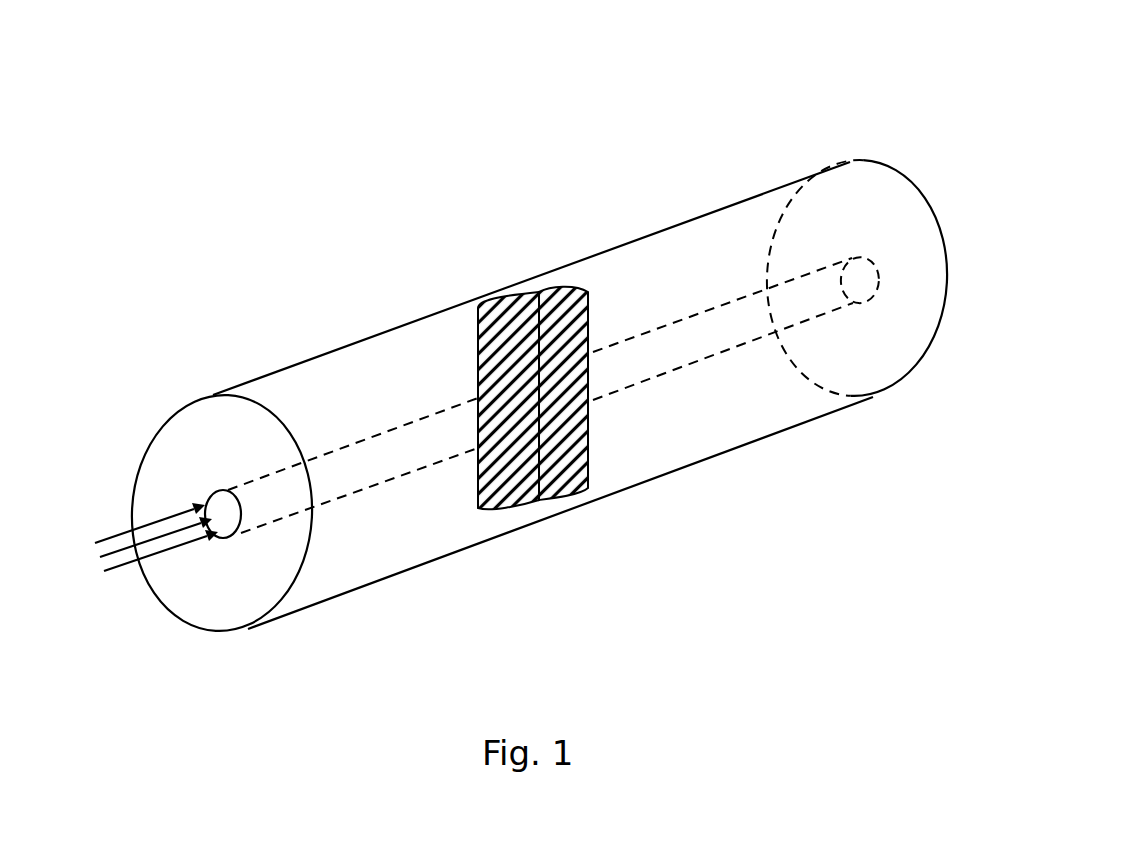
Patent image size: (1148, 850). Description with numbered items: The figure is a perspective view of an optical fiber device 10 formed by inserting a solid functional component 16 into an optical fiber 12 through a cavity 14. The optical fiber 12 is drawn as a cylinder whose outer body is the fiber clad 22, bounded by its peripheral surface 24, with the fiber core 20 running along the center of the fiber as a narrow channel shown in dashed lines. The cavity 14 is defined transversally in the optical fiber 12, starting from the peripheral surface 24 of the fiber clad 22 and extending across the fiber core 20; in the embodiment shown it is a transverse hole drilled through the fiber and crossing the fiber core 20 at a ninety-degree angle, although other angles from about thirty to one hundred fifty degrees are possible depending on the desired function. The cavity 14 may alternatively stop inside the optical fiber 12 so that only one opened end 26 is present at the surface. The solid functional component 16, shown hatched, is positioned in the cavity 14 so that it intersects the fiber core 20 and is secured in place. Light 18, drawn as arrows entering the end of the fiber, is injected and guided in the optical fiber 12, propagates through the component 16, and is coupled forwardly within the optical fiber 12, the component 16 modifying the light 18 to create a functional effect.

The optical fiber device 10 is at (232, 317).
The optical fiber 12 is at (712, 200).
The cavity 14 is at (592, 455).
The solid functional component 16 is at (593, 335).
The light 18 is at (118, 535).
The fiber core 20 is at (362, 436).
The fiber clad 22 is at (238, 607).
The peripheral surface 24 is at (375, 335).
The opened end 26 is at (535, 290).